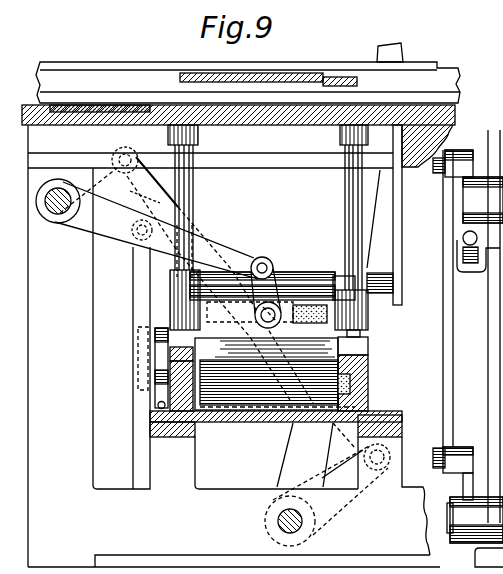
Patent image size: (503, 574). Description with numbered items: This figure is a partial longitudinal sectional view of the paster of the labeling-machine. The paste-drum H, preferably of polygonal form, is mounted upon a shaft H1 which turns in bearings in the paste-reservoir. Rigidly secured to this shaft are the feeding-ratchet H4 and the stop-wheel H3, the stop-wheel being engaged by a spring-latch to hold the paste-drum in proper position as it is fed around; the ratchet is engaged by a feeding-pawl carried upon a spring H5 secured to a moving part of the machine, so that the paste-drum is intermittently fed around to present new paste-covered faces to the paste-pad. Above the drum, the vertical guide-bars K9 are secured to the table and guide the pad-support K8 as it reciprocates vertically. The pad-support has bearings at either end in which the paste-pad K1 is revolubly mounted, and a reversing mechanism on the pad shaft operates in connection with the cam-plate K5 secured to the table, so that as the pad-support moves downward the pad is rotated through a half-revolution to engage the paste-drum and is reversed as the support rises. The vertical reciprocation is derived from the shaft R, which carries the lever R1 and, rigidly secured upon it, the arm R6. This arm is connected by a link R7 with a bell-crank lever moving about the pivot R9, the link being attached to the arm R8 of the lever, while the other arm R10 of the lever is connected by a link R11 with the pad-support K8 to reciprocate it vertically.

The shaft R is at (278, 524).
The lever R1 is at (305, 455).
The arm R6 is at (331, 479).
The link R7 is at (221, 280).
The arm of bell-crank lever R8 is at (135, 172).
The pivot R9 is at (56, 224).
The arm of bell-crank lever R10 is at (227, 256).
The link R11 is at (268, 278).
The paste-drum H is at (275, 372).
The shaft H1 is at (362, 354).
The stop-wheel H3 is at (160, 330).
The feeding-ratchet H4 is at (137, 331).
The spring H5 is at (138, 280).
The paste-pad K1 is at (317, 262).
The cam-plate K5 is at (398, 223).
The pad-support K8 is at (357, 313).
The vertical guide-bars K9 is at (348, 190).